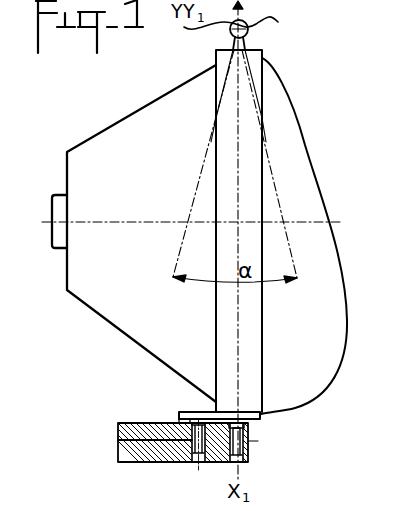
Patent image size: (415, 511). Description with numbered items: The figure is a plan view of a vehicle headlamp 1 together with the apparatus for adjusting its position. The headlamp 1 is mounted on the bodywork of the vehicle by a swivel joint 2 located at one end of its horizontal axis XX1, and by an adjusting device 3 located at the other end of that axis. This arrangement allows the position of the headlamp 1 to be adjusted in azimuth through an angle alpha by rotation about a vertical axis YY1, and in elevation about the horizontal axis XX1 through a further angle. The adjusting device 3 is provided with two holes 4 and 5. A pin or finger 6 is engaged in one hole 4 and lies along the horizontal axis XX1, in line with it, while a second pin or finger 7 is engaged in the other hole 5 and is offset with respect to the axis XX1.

The headlamp 1 is at (132, 114).
The swivel joint 2 is at (260, 25).
The adjusting device 3 is at (119, 447).
The hole 4 is at (242, 463).
The hole 5 is at (201, 463).
The pin or finger 6 is at (243, 428).
The pin or finger 7 is at (185, 431).